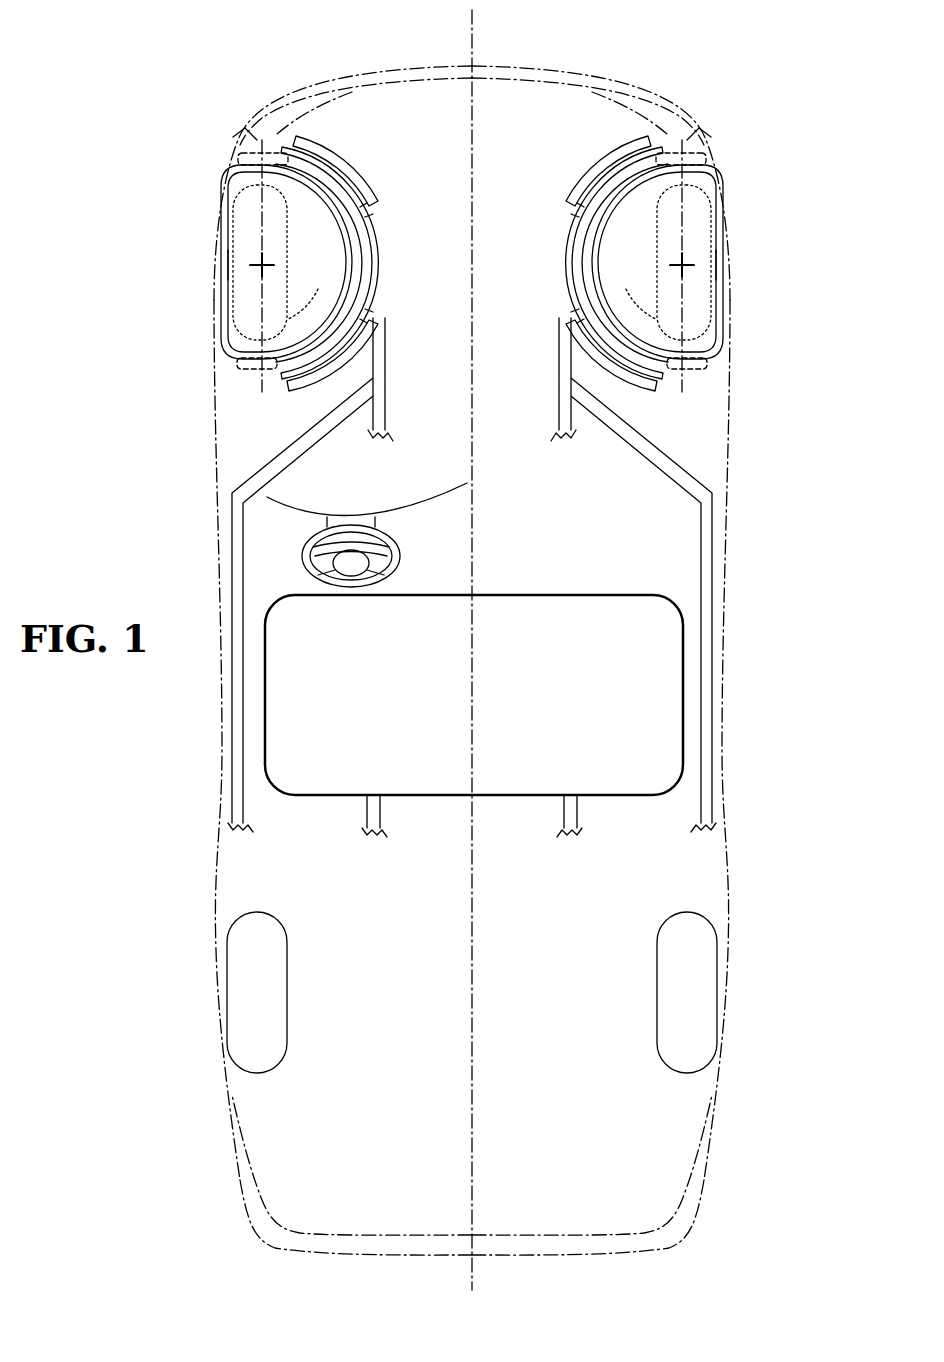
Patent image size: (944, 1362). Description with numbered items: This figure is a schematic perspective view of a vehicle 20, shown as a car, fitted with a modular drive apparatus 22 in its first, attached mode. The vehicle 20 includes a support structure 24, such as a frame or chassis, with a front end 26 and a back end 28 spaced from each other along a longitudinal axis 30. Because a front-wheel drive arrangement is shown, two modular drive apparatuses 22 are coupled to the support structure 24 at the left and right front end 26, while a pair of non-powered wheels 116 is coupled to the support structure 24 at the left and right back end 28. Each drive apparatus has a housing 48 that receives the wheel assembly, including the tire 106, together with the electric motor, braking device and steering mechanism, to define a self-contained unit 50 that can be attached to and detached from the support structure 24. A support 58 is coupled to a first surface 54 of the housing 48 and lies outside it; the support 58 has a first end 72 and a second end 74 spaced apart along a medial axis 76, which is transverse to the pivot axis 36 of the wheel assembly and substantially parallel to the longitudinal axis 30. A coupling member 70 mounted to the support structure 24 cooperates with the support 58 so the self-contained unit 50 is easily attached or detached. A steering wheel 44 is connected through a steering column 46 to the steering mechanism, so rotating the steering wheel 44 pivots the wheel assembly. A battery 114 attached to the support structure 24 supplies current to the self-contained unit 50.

The vehicle 20 is at (507, 604).
The modular drive apparatus 22 is at (462, 266).
The support structure 24 is at (381, 252).
The front end 26 is at (472, 161).
The back end 28 is at (472, 1202).
The longitudinal axis 30 is at (483, 908).
The pivot axis 36 is at (265, 262).
The steering wheel 44 is at (392, 549).
The steering column 46 is at (367, 507).
The housing 48 is at (240, 343).
The self-contained unit 50 is at (468, 296).
The first surface 54 is at (472, 263).
The support 58 is at (277, 157).
The coupling member 70 is at (313, 160).
The first end 72 is at (243, 163).
The second end 74 is at (243, 363).
The medial axis 76 is at (233, 140).
The tire 106 is at (472, 262).
The battery 114 is at (662, 677).
The non-powered wheel 116 is at (253, 998).